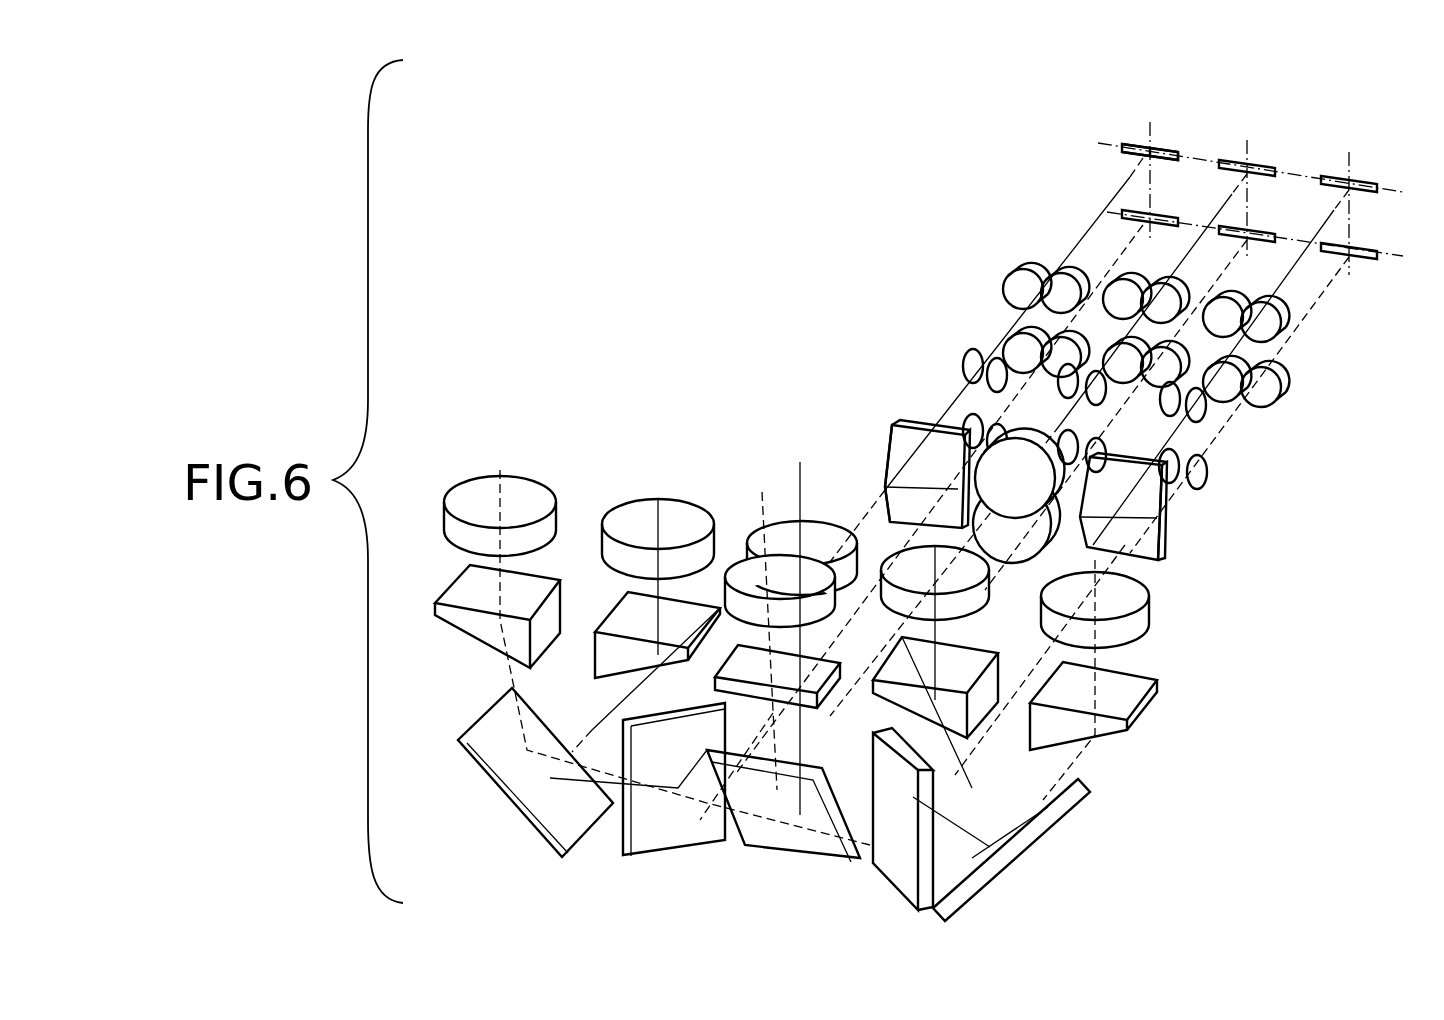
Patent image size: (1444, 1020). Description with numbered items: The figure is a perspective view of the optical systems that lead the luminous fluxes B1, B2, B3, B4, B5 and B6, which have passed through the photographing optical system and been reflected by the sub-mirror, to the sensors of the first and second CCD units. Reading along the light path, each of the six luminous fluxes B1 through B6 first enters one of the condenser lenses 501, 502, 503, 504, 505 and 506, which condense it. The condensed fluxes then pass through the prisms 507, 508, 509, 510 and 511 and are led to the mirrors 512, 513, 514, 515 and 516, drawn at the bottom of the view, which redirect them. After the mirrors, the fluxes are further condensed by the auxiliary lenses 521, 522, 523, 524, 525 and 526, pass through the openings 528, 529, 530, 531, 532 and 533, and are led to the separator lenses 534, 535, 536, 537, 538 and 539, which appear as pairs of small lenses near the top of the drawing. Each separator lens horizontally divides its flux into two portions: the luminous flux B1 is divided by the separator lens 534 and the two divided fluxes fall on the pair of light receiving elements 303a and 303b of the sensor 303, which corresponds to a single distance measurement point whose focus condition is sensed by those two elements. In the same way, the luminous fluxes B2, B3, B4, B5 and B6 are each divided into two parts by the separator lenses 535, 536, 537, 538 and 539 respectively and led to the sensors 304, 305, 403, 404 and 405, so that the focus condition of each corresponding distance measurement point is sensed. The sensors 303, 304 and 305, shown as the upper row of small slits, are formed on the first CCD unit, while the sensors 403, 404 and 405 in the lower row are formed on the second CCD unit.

The sensor 303 is at (1084, 133).
The light receiving element 303a is at (1128, 147).
The light receiving element 303b is at (1172, 152).
The sensor 304 is at (1256, 163).
The sensor 305 is at (1356, 180).
The sensor 403 is at (1160, 215).
The sensor 404 is at (1260, 232).
The sensor 405 is at (1360, 250).
The separator lens 534 is at (1020, 268).
The separator lens 535 is at (1065, 273).
The separator lens 536 is at (1283, 318).
The separator lens 537 is at (1015, 344).
The separator lens 538 is at (1180, 292).
The separator lens 539 is at (1283, 385).
The opening 528 is at (972, 350).
The opening 529 is at (1100, 402).
The opening 530 is at (1080, 395).
The opening 531 is at (968, 414).
The opening 532 is at (1090, 440).
The opening 533 is at (1202, 478).
The auxiliary lens 521 is at (892, 425).
The auxiliary lens 522 is at (1016, 440).
The auxiliary lens 523 is at (1165, 522).
The auxiliary lens 524 is at (887, 472).
The auxiliary lens 525 is at (1014, 562).
The auxiliary lens 526 is at (1160, 553).
The condenser lens 501 is at (620, 518).
The condenser lens 502 is at (745, 560).
The condenser lens 503 is at (897, 600).
The condenser lens 504 is at (485, 478).
The condenser lens 505 is at (836, 538).
The condenser lens 506 is at (1150, 626).
The prism 507 is at (455, 612).
The prism 508 is at (594, 648).
The prism 509 is at (716, 680).
The prism 510 is at (972, 740).
The prism 511 is at (1130, 722).
The mirror 512 is at (525, 820).
The mirror 513 is at (673, 842).
The mirror 514 is at (767, 847).
The mirror 515 is at (907, 893).
The mirror 516 is at (1033, 855).
The luminous flux B1 is at (656, 510).
The luminous flux B2 is at (765, 627).
The luminous flux B3 is at (935, 548).
The luminous flux B4 is at (505, 492).
The luminous flux B5 is at (803, 622).
The luminous flux B6 is at (1100, 560).